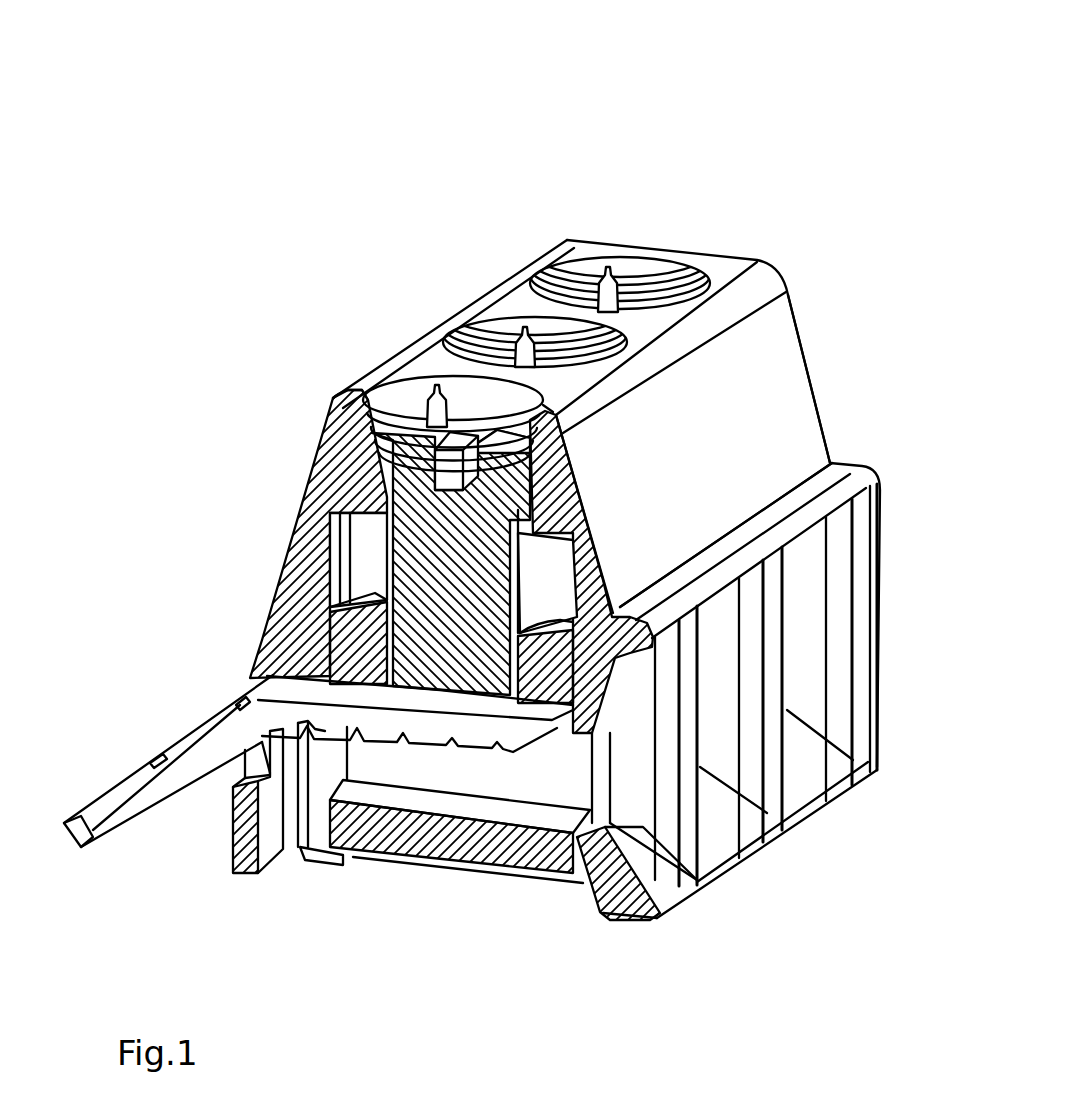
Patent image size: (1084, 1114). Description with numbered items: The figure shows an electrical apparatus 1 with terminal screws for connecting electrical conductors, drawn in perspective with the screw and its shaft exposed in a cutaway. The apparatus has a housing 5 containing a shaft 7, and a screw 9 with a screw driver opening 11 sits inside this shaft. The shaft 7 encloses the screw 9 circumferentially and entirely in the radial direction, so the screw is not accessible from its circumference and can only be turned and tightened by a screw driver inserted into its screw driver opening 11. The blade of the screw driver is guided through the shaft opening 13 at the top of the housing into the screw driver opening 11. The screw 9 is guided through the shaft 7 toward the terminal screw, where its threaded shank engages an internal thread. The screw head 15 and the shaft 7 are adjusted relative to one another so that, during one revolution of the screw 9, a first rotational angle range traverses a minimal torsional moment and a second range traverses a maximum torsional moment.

The electrical apparatus 1 is at (762, 170).
The housing 5 is at (782, 397).
The shaft 7 is at (375, 432).
The screw 9 is at (437, 587).
The screw driver opening 11 is at (400, 388).
The shaft opening 13 is at (510, 338).
The screw head 15 is at (315, 462).